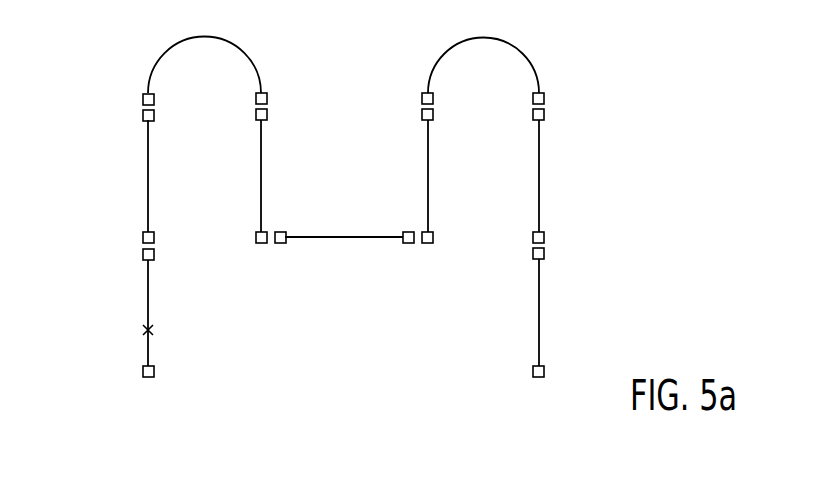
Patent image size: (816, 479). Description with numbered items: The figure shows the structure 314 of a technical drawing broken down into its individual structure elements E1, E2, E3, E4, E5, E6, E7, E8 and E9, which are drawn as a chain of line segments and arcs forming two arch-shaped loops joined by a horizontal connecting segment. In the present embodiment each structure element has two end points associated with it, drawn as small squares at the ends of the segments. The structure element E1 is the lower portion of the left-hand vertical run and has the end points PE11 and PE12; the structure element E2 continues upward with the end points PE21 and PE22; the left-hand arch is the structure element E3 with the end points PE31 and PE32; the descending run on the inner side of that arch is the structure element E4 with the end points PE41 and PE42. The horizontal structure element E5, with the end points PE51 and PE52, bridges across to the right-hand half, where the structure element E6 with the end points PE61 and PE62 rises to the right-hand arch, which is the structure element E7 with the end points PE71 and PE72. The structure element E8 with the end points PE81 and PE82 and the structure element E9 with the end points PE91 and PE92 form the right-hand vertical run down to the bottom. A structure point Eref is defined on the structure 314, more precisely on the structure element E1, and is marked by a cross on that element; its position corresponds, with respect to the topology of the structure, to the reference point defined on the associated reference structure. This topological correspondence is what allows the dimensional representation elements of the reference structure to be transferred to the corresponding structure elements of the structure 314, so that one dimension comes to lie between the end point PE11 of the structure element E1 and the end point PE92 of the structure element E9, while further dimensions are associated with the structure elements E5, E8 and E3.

The structure 314 is at (128, 388).
The structure element E1 is at (147, 349).
The structure element E2 is at (147, 173).
The structure element E3 is at (202, 36).
The structure element E4 is at (260, 173).
The structure element E5 is at (342, 235).
The structure element E6 is at (429, 163).
The structure element E7 is at (488, 36).
The structure element E8 is at (540, 163).
The structure element E9 is at (540, 322).
The structure point Eref is at (147, 330).
The end point PE11 is at (154, 374).
The end point PE12 is at (143, 254).
The end point PE21 is at (143, 237).
The end point PE22 is at (143, 115).
The end point PE31 is at (143, 100).
The end point PE32 is at (267, 98).
The end point PE41 is at (267, 113).
The end point PE42 is at (262, 245).
The end point PE51 is at (280, 245).
The end point PE52 is at (406, 245).
The end point PE61 is at (433, 245).
The end point PE62 is at (422, 115).
The end point PE71 is at (422, 97).
The end point PE72 is at (545, 97).
The end point PE81 is at (545, 113).
The end point PE82 is at (545, 237).
The end point PE91 is at (545, 253).
The end point PE92 is at (533, 373).